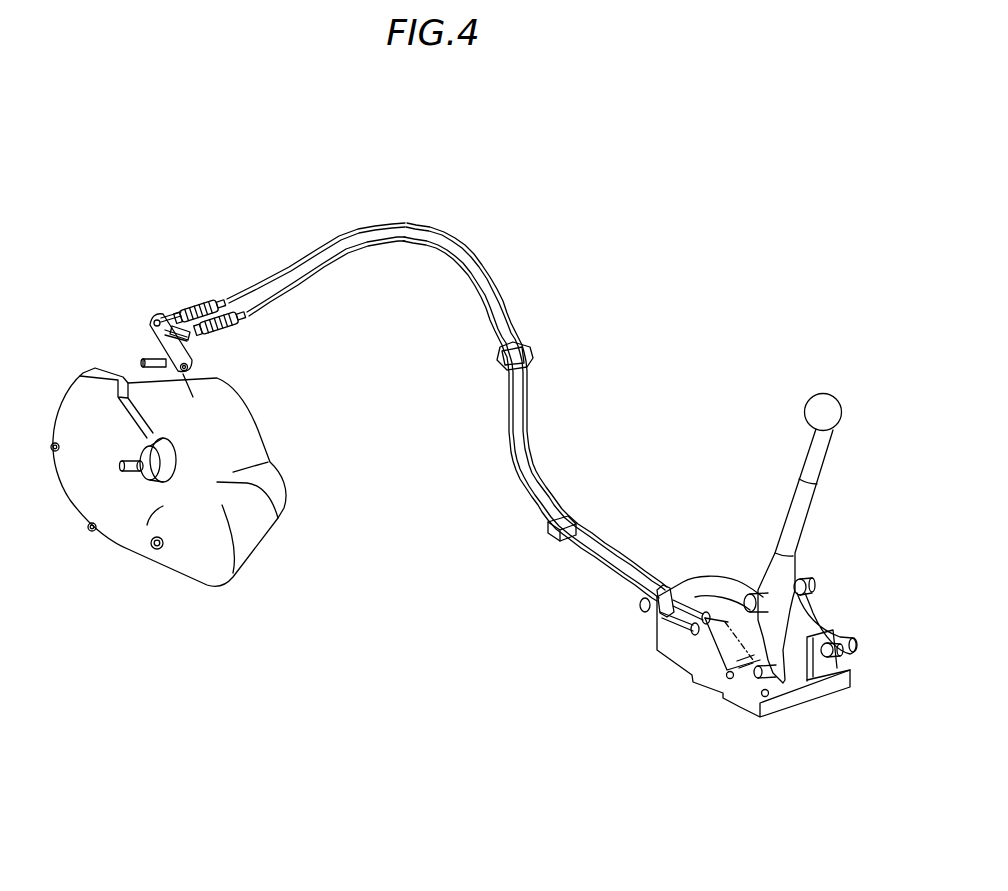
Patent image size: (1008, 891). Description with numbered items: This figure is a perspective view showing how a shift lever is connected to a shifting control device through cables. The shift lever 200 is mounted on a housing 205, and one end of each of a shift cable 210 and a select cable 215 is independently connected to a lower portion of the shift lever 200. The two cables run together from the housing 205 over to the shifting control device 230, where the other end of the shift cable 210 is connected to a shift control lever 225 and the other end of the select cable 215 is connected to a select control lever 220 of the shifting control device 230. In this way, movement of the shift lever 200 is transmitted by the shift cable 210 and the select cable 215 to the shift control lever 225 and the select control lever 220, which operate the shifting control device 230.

The shift lever 200 is at (808, 493).
The housing 205 is at (803, 697).
The shift cable 210 is at (368, 228).
The select cable 215 is at (375, 248).
The select control lever 220 is at (197, 340).
The shift control lever 225 is at (158, 338).
The shifting control device 230 is at (149, 558).